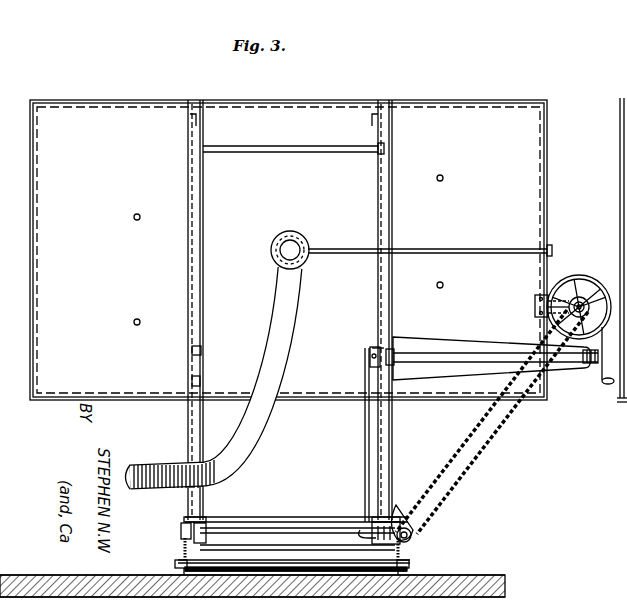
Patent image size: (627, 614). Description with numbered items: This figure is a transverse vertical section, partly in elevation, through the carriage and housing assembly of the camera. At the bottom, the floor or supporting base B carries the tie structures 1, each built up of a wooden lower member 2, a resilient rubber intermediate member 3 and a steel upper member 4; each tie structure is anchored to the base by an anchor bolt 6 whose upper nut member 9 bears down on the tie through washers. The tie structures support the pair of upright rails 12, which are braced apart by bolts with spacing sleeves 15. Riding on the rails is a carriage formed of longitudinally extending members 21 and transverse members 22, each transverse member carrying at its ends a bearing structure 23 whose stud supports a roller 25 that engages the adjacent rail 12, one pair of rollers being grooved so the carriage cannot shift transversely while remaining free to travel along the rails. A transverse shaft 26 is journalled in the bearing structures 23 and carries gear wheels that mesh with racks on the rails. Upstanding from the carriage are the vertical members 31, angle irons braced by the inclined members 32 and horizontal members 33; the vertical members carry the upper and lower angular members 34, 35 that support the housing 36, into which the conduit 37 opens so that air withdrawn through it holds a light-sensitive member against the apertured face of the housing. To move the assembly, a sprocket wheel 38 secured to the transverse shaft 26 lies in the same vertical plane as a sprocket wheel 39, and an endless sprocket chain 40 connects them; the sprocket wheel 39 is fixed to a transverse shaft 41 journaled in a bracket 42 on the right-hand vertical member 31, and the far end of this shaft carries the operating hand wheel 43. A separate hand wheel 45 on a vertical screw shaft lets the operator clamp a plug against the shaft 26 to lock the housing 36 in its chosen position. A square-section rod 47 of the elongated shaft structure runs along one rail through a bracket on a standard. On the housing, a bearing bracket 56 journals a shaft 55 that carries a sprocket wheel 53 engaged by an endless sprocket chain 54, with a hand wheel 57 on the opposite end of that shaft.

The tie structure 1 is at (238, 570).
The lower member 2 is at (365, 572).
The intermediate resilient member 3 is at (340, 572).
The upper member 4 is at (262, 572).
The anchor bolt 6 is at (184, 575).
The upper nut member 9 is at (176, 563).
The rail 12 is at (183, 548).
The spacing sleeve 15 is at (225, 548).
The longitudinally extending member 21 is at (184, 513).
The transverse member 22 is at (258, 523).
The bearing structure 23 is at (202, 527).
The roller 25 is at (181, 530).
The transverse shaft 26 is at (300, 530).
The vertical member 31 is at (190, 213).
The inclined member 32 is at (190, 258).
The horizontal member 33 is at (192, 350).
The upper angular member 34 is at (190, 120).
The lower angular member 35 is at (192, 381).
The housing 36 is at (532, 148).
The conduit 37 is at (151, 465).
The sprocket wheel 38 is at (362, 534).
The sprocket wheel 39 is at (372, 354).
The endless sprocket chain 40 is at (365, 442).
The transverse shaft 41 is at (444, 353).
The bracket 42 is at (472, 344).
The operating hand wheel 43 is at (378, 378).
The hand wheel 45 is at (372, 348).
The rod 47 is at (412, 537).
The sprocket wheel 53 is at (566, 318).
The endless sprocket chain 54 is at (500, 421).
The shaft 55 is at (592, 290).
The bearing bracket 56 is at (535, 305).
The hand wheel 57 is at (547, 296).
The floor or supporting base B is at (282, 592).